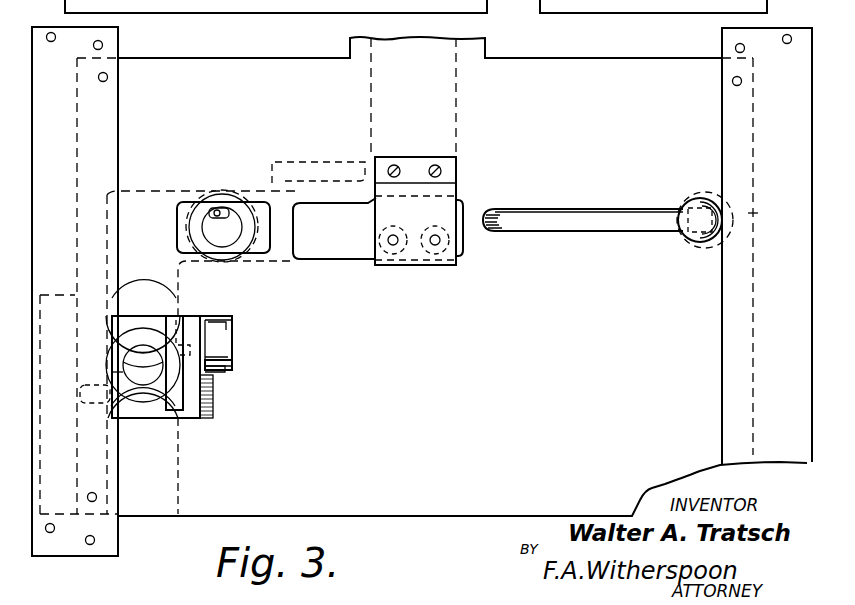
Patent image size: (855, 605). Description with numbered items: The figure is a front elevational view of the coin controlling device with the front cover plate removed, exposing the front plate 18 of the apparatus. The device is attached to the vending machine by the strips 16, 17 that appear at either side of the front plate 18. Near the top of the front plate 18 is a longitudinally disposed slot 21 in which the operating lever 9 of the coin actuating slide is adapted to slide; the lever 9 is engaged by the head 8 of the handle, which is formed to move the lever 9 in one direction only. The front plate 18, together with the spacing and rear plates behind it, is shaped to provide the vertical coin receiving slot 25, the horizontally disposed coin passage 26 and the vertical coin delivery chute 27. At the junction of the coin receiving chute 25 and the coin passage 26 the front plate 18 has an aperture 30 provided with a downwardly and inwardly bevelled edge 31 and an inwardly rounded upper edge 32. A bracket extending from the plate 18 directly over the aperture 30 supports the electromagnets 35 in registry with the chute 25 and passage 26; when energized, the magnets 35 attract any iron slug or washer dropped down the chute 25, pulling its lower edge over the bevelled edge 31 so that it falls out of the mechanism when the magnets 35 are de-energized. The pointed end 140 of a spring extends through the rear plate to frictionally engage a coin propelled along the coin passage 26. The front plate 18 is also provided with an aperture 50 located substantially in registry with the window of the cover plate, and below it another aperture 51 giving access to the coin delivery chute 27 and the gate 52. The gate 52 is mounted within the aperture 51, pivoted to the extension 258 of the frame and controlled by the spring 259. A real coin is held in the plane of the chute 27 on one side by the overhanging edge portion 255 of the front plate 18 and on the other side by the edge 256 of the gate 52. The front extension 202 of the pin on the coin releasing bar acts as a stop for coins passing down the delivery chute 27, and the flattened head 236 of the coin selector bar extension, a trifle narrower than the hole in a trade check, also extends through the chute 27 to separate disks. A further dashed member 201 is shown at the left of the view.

The head 8 is at (733, 212).
The operating lever 9 is at (694, 200).
The strip 16 is at (775, 30).
The strip 17 is at (65, 30).
The front plate 18 is at (614, 65).
The longitudinally disposed slot 21 is at (597, 228).
The vertical coin receiving slot 25 is at (372, 92).
The horizontally disposed coin passage 26 is at (270, 189).
The vertical coin delivery chute 27 is at (180, 298).
The aperture 30 is at (332, 258).
The bevelled edge 31 is at (414, 262).
The inwardly rounded upper edge 32 is at (460, 193).
The electromagnets 35 is at (380, 241).
The aperture 50 is at (180, 214).
The aperture 51 is at (228, 321).
The gate 52 is at (170, 412).
The pointed end 140 is at (215, 221).
The dashed member 201 is at (80, 382).
The front extension of pin 202 is at (116, 416).
The head 236 is at (140, 362).
The overhanging edge portion 255 is at (116, 372).
The edge 256 is at (166, 390).
The extension 258 is at (232, 362).
The spring 259 is at (222, 372).